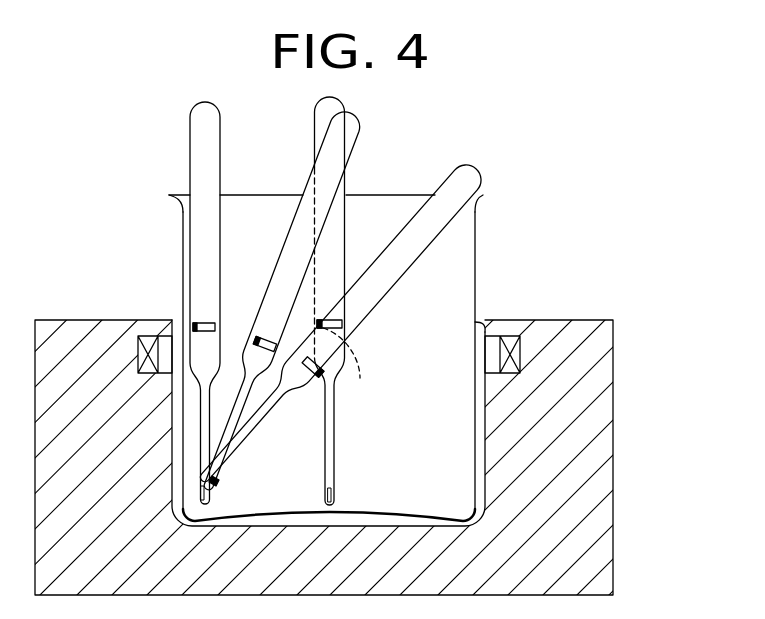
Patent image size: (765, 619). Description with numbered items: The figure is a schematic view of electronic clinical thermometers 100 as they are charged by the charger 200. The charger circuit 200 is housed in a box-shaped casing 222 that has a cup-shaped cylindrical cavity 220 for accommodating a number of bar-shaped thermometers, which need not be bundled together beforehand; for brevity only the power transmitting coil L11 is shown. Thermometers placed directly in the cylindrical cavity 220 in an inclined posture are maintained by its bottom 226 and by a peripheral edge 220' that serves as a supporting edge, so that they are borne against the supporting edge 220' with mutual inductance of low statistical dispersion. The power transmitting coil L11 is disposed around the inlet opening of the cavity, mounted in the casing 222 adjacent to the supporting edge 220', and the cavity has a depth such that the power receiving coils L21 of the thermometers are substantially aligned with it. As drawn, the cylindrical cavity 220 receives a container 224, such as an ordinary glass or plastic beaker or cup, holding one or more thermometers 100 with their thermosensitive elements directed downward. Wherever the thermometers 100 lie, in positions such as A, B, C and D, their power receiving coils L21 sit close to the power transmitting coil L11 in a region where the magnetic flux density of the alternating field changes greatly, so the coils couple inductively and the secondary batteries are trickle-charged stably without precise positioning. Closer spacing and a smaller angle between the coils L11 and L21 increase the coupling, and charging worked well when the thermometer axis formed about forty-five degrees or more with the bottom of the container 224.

The electronic clinical thermometer 100 is at (190, 124).
The charger circuit 200 is at (669, 472).
The cylindrical cavity 220 is at (361, 389).
The peripheral edge 220' is at (517, 308).
The box-shaped casing 222 is at (613, 403).
The container 224 is at (477, 246).
The bottom 226 is at (357, 528).
The power transmitting coil L11 is at (152, 335).
The power receiving coil L21 is at (264, 338).